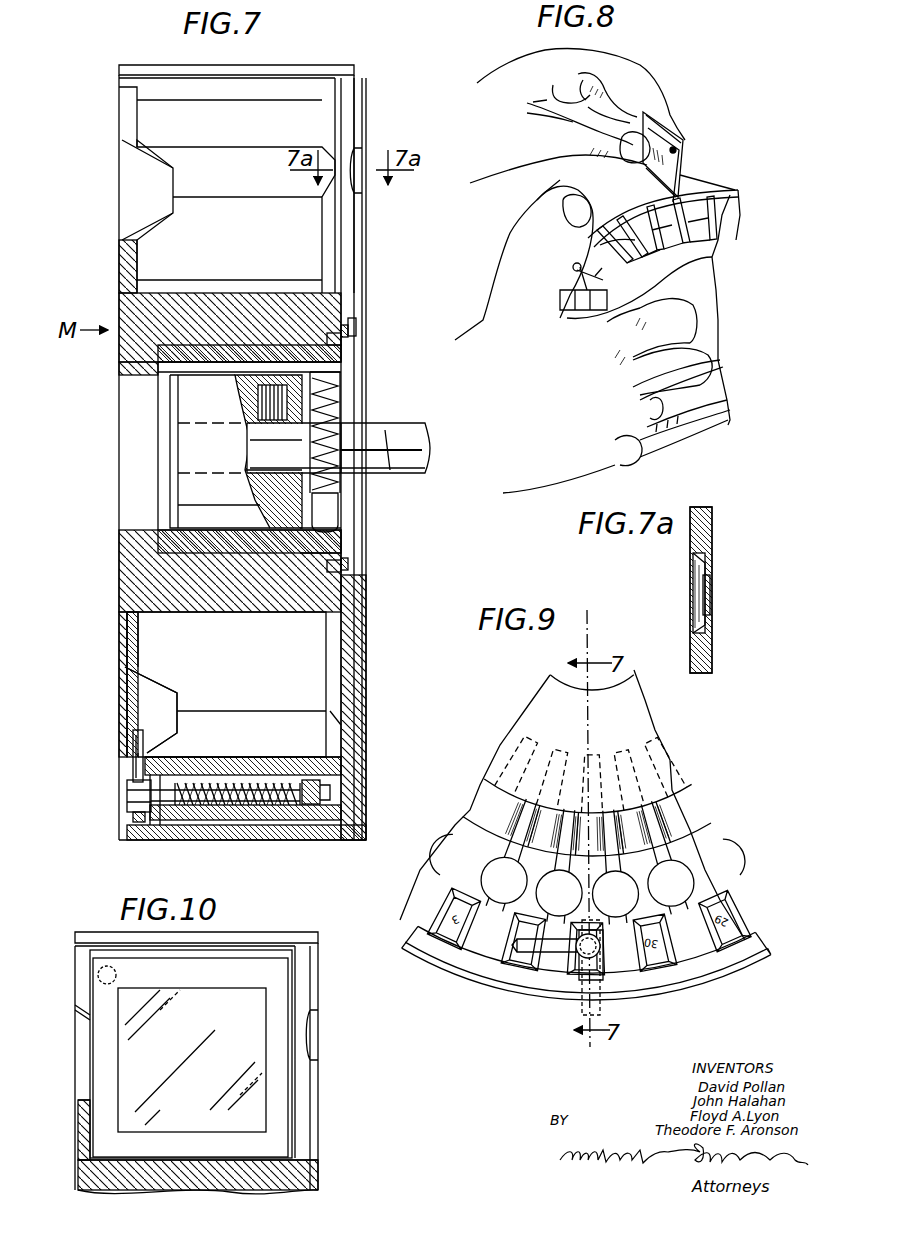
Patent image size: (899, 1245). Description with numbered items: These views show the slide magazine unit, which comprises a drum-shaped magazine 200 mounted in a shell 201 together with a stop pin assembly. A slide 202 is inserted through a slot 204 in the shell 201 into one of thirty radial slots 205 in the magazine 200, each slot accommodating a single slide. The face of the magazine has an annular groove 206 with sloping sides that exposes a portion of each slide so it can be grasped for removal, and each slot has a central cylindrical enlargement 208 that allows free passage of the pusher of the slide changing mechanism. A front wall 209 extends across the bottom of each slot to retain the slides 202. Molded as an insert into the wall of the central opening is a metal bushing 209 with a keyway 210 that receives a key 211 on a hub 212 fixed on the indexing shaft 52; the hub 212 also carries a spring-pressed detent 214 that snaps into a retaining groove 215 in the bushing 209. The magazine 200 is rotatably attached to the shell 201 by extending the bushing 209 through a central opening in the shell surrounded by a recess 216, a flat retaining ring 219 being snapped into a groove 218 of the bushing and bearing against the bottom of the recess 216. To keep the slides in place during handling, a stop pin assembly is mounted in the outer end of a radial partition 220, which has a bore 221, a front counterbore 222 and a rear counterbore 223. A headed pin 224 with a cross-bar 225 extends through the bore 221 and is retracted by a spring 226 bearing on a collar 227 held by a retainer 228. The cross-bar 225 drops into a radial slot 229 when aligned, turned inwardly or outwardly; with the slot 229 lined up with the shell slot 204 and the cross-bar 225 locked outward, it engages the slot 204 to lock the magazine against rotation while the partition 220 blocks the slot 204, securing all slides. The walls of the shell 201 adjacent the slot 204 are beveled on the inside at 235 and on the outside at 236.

In FIG. 7, the indexing shaft 52 is at (380, 430).
In FIG. 7, the magazine 200 is at (135, 570).
In FIG. 8, the magazine 200 is at (695, 288).
In FIG. 7, the shell 201 is at (355, 640).
In FIG. 8, the shell 201 is at (705, 170).
In FIG. 7A, the shell 201 is at (705, 527).
In FIG. 9, the shell 201 is at (690, 975).
In FIG. 8, the slide 202 is at (680, 134).
In FIG. 10, the slide 202 is at (100, 1055).
In FIG. 7, the slot 204 is at (258, 72).
In FIG. 8, the slot 204 is at (690, 190).
In FIG. 10, the slot 204 is at (218, 937).
In FIG. 7, the slot 205 is at (310, 262).
In FIG. 8, the slot 205 is at (690, 235).
In FIG. 9, the slot 205 is at (660, 822).
In FIG. 7, the annular groove 206 is at (145, 697).
In FIG. 9, the annular groove 206 is at (685, 840).
In FIG. 7, the central cylindrical enlargement 208 is at (320, 740).
In FIG. 9, the central cylindrical enlargement 208 is at (692, 868).
In FIG. 7, the front wall / metal bushing 209 is at (120, 272).
In FIG. 9, the front wall / metal bushing 209 is at (660, 772).
In FIG. 10, the front wall / metal bushing 209 is at (85, 1142).
In FIG. 7, the keyway 210 is at (165, 367).
In FIG. 7, the key 211 is at (258, 372).
In FIG. 7, the hub 212 is at (185, 420).
In FIG. 7, the spring-pressed detent 214 is at (328, 508).
In FIG. 7, the retaining groove 215 is at (350, 545).
In FIG. 7, the recess 216 is at (352, 336).
In FIG. 7, the groove 218 is at (350, 350).
In FIG. 7, the flat retaining ring 219 is at (356, 320).
In FIG. 7, the radial partition 220 is at (320, 768).
In FIG. 9, the radial partition 220 is at (575, 975).
In FIG. 7, the bore 221 is at (170, 805).
In FIG. 7, the front counterbore 222 is at (152, 838).
In FIG. 7, the rear counterbore 223 is at (215, 805).
In FIG. 7, the headed pin 224 is at (130, 795).
In FIG. 7, the cross-bar 225 is at (133, 745).
In FIG. 8, the cross-bar 225 is at (560, 290).
In FIG. 9, the cross-bar 225 is at (555, 970).
In FIG. 7, the spring 226 is at (275, 805).
In FIG. 7, the collar 227 is at (325, 830).
In FIG. 7, the retainer 228 is at (325, 795).
In FIG. 7, the radial slot 229 is at (133, 818).
In FIG. 9, the radial slot 229 is at (597, 970).
In FIG. 7A, the inside bevel 235 is at (693, 555).
In FIG. 7A, the outside bevel 236 is at (712, 618).